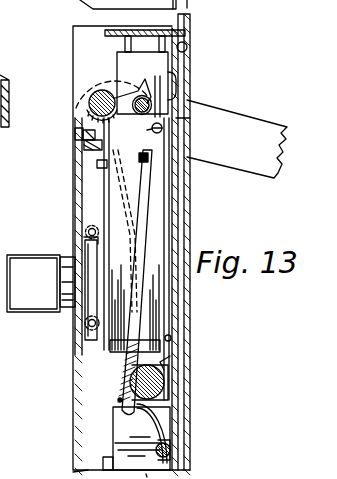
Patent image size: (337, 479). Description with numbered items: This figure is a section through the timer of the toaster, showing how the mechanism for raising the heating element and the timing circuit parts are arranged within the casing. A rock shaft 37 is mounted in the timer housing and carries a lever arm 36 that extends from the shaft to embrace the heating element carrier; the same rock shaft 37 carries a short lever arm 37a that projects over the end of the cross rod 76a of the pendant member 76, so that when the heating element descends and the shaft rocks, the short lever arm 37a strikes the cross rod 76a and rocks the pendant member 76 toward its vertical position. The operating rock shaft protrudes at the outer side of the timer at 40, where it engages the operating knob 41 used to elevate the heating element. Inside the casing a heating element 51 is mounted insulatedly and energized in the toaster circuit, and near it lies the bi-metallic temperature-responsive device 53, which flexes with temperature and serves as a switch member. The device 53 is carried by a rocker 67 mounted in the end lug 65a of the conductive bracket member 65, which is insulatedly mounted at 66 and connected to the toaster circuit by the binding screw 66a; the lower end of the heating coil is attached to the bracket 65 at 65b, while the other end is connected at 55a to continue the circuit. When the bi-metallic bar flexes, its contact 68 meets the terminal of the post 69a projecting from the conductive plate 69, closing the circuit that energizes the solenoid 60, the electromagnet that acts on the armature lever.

The lever arm 36 is at (257, 127).
The rock shaft 37 is at (88, 103).
The short lever arm 37a is at (130, 82).
The protruding end of rock shaft 40 is at (72, 308).
The operating knob 41 is at (32, 257).
The heating element 51 is at (160, 191).
The temperature-responsive device 53 is at (160, 219).
The heating coil connection 55a is at (187, 122).
The solenoid 60 is at (113, 435).
The conductive bracket member 65 is at (167, 383).
The end lug of bracket 65a is at (163, 365).
The binding screw attachment 65b is at (185, 336).
The insulated mounting 66 is at (186, 229).
The binding screw 66a is at (168, 444).
The rocker 67 is at (130, 384).
The contact 68 is at (154, 129).
The conductive plate 69 is at (48, 191).
The post 69a is at (98, 180).
The pendant member 76 is at (189, 56).
The cross rod 76a is at (178, 24).